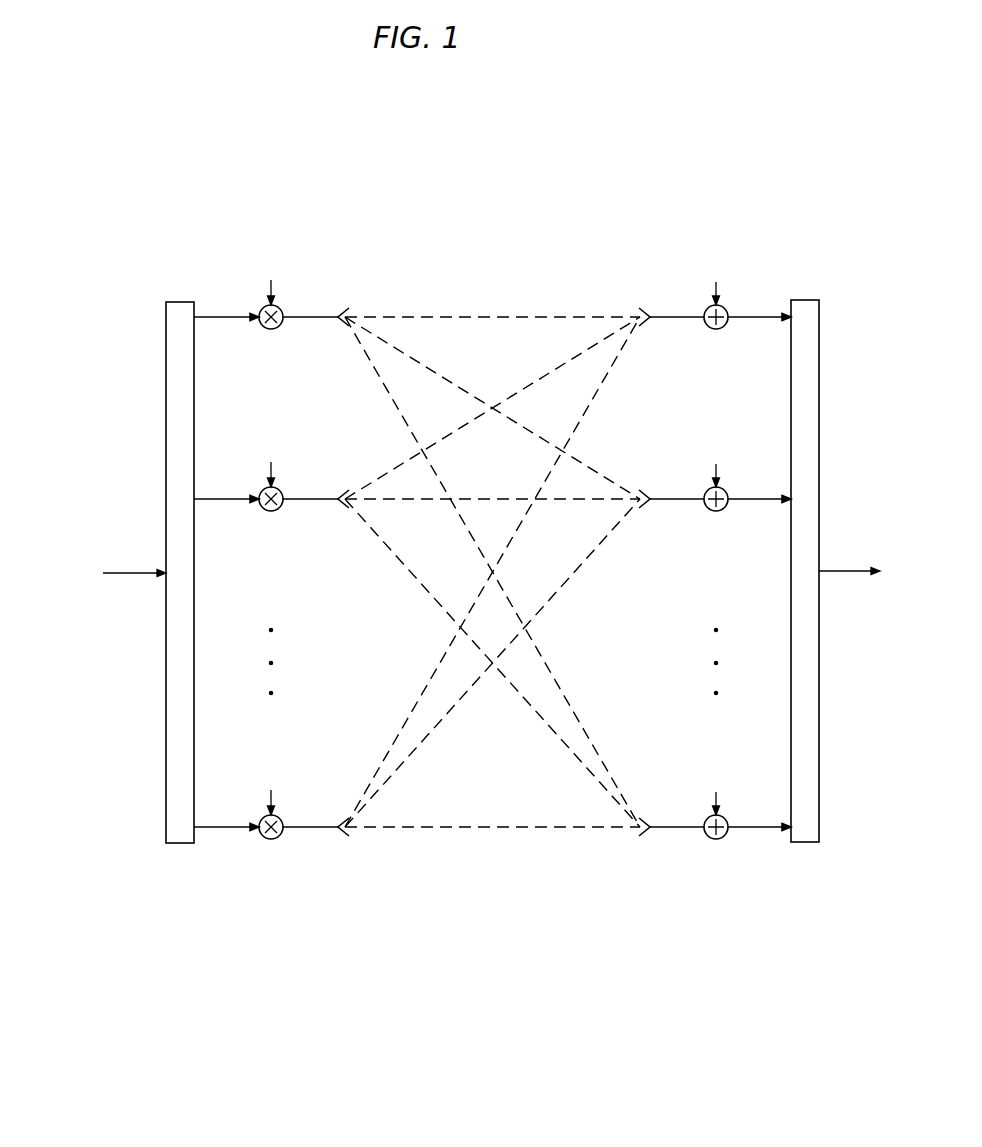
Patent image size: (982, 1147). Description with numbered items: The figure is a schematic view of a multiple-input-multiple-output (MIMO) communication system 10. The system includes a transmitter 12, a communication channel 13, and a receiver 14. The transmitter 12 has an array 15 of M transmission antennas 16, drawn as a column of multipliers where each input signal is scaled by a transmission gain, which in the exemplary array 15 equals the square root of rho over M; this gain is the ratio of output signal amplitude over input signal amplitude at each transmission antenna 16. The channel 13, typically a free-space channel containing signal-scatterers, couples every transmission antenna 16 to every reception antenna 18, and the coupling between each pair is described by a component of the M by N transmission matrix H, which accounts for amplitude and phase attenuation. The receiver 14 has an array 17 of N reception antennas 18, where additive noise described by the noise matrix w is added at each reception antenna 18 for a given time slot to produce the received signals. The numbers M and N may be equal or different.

The multiple-input-multiple-output (MIMO) communication system 10 is at (160, 131).
The transmitter 12 is at (166, 841).
The communication channel 13 is at (657, 878).
The receiver 14 is at (822, 310).
The array of transmission antennas 15 is at (271, 206).
The transmission antennas 16 is at (347, 333).
The array of reception antennas 17 is at (716, 206).
The reception antennas 18 is at (727, 333).